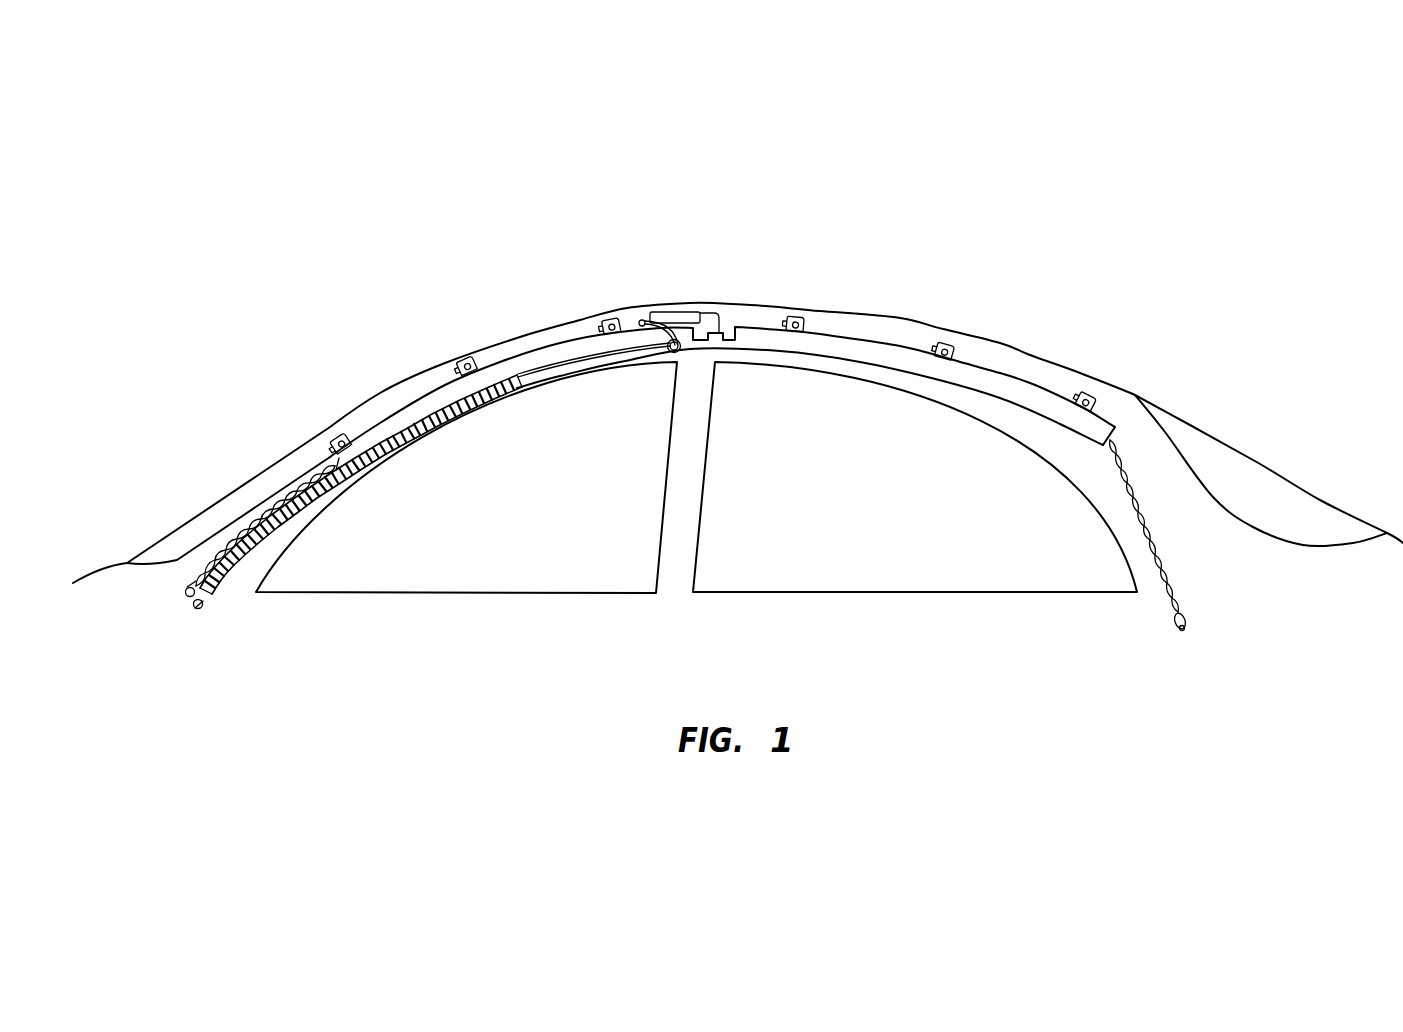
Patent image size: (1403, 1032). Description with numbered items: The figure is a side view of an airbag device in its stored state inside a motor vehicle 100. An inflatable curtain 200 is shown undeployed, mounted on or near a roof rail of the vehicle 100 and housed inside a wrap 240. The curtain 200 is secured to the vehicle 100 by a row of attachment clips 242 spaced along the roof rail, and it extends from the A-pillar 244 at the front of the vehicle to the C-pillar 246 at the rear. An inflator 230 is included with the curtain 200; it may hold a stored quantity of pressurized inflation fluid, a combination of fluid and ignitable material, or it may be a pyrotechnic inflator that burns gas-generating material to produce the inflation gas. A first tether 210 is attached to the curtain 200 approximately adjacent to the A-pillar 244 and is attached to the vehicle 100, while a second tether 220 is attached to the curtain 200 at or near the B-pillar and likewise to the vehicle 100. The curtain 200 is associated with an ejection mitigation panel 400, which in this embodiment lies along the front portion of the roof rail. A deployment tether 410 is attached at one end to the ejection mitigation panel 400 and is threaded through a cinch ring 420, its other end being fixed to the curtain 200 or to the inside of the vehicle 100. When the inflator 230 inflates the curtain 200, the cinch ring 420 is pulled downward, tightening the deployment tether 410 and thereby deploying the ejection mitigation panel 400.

The motor vehicle 100 is at (973, 323).
The inflatable curtain 200 is at (876, 344).
The first tether 210 is at (233, 547).
The second tether 220 is at (1158, 528).
The inflator 230 is at (670, 305).
The wrap 240 is at (1002, 390).
The attachment clips 242 is at (795, 305).
The A-pillar 244 is at (276, 503).
The C-pillar 246 is at (1158, 455).
The ejection mitigation panel 400 is at (310, 517).
The deployment tether 410 is at (572, 350).
The cinch ring 420 is at (672, 352).